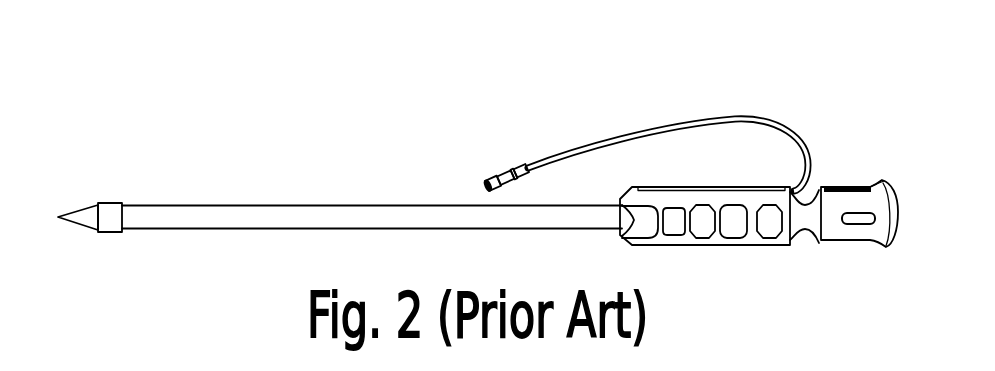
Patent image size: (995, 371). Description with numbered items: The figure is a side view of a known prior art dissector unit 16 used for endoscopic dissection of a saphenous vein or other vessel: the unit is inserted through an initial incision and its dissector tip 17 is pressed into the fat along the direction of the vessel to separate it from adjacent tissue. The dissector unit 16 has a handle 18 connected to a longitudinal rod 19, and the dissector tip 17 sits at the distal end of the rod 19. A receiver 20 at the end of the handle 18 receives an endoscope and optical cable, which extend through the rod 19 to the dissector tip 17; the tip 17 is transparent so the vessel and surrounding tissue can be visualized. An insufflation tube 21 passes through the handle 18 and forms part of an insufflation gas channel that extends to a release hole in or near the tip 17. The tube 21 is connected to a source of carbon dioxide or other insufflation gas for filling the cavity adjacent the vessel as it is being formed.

The dissector unit 16 is at (478, 185).
The dissector tip 17 is at (84, 209).
The handle 18 is at (738, 246).
The longitudinal rod 19 is at (250, 205).
The receiver 20 is at (864, 188).
The insufflation tube 21 is at (535, 165).